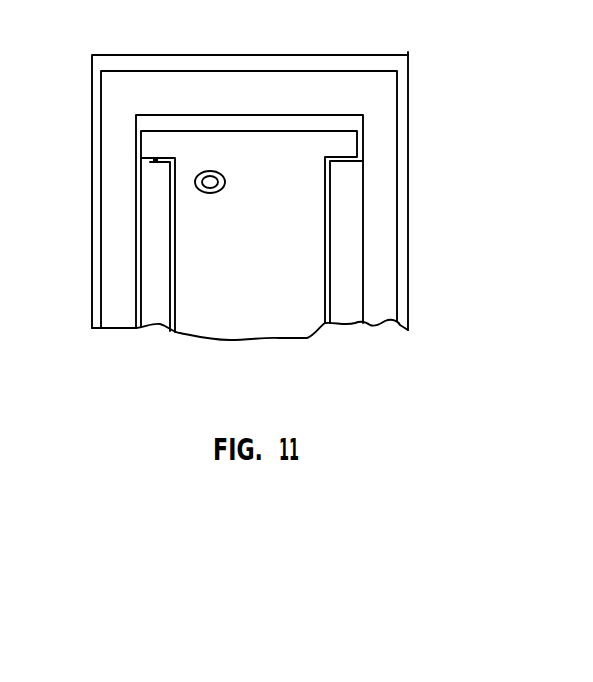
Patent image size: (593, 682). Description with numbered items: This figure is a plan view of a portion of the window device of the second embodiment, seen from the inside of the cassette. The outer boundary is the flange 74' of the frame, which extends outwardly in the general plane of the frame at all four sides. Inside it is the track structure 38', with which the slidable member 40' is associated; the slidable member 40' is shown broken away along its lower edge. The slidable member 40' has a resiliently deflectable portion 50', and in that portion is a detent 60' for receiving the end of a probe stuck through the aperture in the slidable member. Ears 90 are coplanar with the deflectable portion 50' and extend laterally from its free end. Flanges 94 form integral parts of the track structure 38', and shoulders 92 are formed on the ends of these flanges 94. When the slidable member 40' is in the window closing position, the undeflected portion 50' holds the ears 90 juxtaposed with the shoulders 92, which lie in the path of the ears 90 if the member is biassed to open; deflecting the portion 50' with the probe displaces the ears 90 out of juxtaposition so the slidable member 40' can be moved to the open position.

The flange 74' is at (280, 166).
The track structure 38' is at (286, 199).
The ears 90 is at (151, 140).
The flanges 94 is at (117, 283).
The shoulders 92 is at (150, 163).
The deflectable portion 50' is at (312, 246).
The detent 60' is at (232, 108).
The slidable member 40' is at (250, 356).